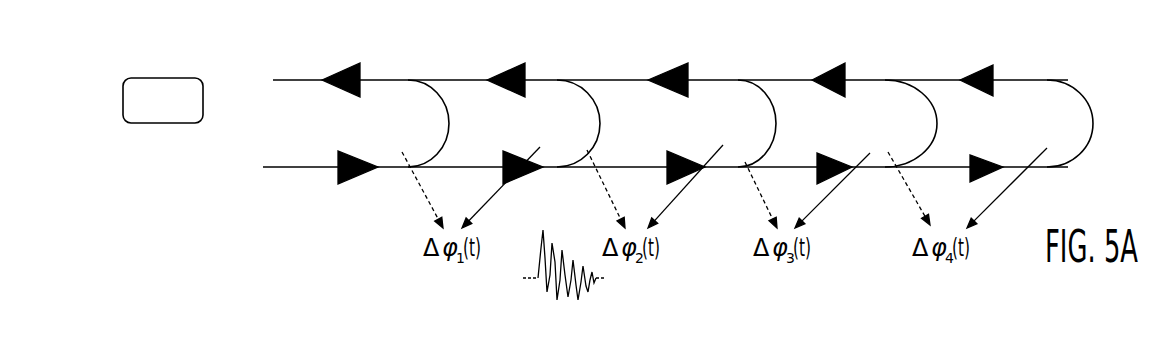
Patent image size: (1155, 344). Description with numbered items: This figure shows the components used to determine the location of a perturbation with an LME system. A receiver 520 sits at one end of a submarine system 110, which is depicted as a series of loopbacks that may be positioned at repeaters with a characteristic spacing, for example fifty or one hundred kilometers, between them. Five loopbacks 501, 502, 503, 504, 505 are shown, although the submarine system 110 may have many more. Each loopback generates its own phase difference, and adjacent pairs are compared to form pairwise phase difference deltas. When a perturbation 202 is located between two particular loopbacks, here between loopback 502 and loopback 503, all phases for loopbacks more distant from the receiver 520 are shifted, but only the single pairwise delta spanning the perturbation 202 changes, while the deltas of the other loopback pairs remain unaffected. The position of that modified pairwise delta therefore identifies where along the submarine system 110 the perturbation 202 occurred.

The submarine system 110 is at (1043, 63).
The receiver 520 is at (178, 114).
The loopback 501 is at (360, 138).
The loopback 502 is at (496, 138).
The loopback 503 is at (696, 138).
The loopback 504 is at (836, 138).
The loopback 505 is at (996, 138).
The perturbation 202 is at (545, 301).